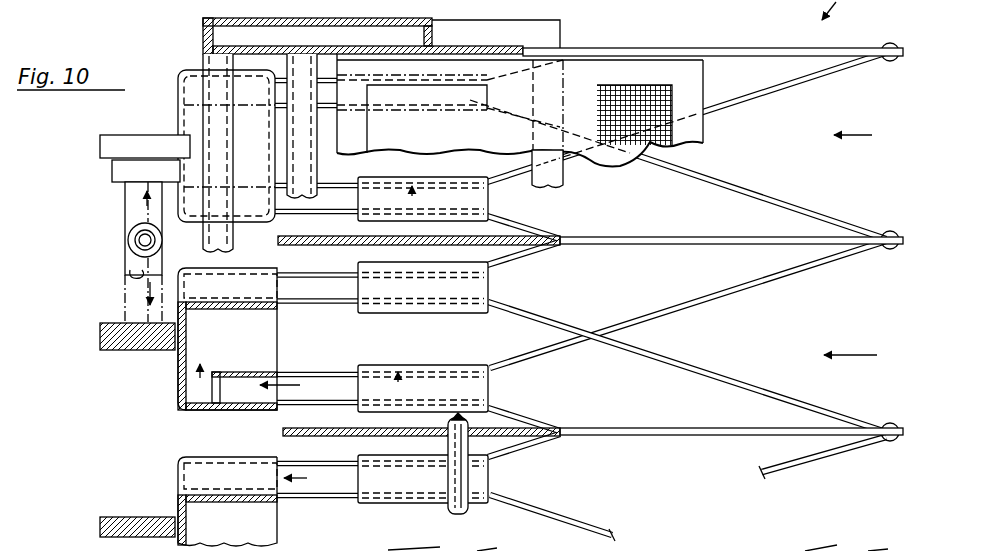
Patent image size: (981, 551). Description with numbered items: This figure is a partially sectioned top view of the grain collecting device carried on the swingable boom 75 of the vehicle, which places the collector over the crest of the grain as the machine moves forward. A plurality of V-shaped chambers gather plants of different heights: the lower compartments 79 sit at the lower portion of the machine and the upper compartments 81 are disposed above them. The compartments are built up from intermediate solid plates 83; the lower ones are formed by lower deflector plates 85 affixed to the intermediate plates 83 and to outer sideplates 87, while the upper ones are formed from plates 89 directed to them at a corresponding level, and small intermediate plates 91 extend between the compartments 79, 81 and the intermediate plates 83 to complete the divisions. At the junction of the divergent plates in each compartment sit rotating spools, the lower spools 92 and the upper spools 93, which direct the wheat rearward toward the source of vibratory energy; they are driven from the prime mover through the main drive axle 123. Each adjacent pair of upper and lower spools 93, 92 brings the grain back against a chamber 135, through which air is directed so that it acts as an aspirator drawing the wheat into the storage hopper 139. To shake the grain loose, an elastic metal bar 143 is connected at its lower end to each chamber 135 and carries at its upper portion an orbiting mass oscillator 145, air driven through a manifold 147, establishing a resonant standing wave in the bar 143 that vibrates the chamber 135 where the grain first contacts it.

The swingable boom 75 is at (203, 22).
The V-shaped chambers (lower compartments) 79 is at (507, 100).
The V-shaped chambers (upper compartments) 81 is at (497, 204).
The intermediate solid plates 83 is at (743, 239).
The lower deflector plates 85 is at (818, 212).
The outer sideplates 87 is at (730, 48).
The plates (upper compartment plates) 89 is at (833, 77).
The small intermediate plates 91 is at (547, 233).
The rotating spools (lower) 92 is at (383, 98).
The rotating spools (upper) 93 is at (427, 174).
The main drive axle 123 is at (468, 510).
The chamber 135 is at (250, 205).
The storage hopper 139 is at (690, 134).
The elastic metal bar 143 is at (133, 170).
The orbiting mass oscillator 145 is at (110, 142).
The manifold 147 is at (133, 215).